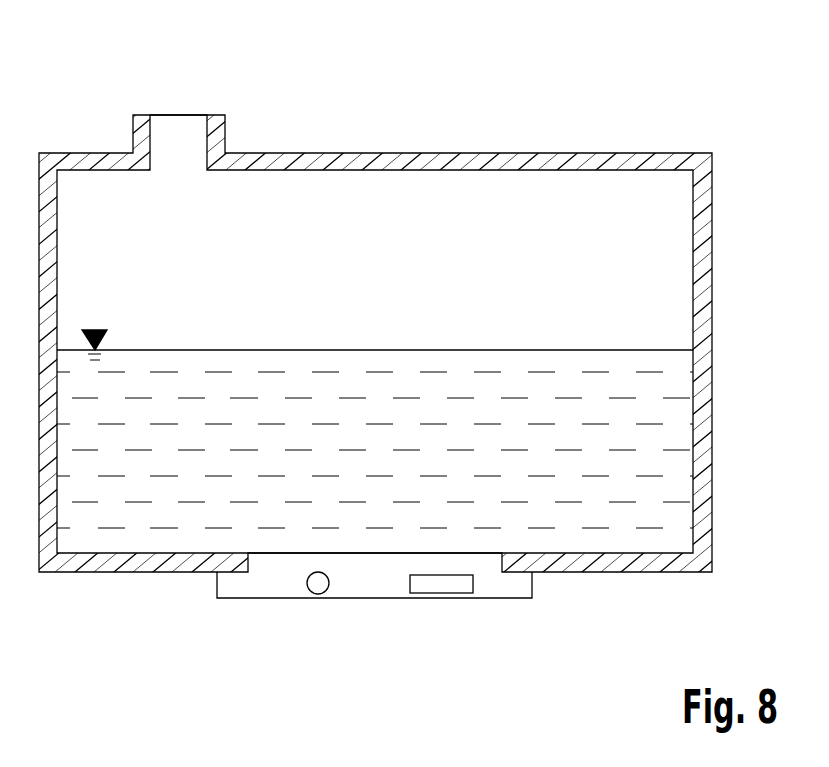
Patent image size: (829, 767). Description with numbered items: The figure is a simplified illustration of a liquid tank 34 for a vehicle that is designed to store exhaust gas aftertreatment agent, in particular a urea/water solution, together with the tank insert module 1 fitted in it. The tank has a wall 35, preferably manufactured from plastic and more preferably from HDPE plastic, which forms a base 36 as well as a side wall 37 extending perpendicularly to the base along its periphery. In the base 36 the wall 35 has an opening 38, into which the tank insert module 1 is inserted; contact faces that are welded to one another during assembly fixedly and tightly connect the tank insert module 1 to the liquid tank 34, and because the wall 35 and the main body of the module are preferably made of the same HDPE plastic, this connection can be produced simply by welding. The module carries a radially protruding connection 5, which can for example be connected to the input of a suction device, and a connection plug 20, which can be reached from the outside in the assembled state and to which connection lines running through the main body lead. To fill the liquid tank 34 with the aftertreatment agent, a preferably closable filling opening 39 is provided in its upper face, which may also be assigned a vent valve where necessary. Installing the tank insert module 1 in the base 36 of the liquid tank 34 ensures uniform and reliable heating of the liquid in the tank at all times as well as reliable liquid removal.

The tank insert module 1 is at (522, 612).
The connection 5 is at (318, 594).
The connection plug 20 is at (443, 586).
The liquid tank 34 is at (414, 297).
The wall 35 is at (712, 258).
The base 36 is at (617, 563).
The side wall 37 is at (697, 378).
The opening 38 is at (265, 572).
The filling opening 39 is at (178, 125).